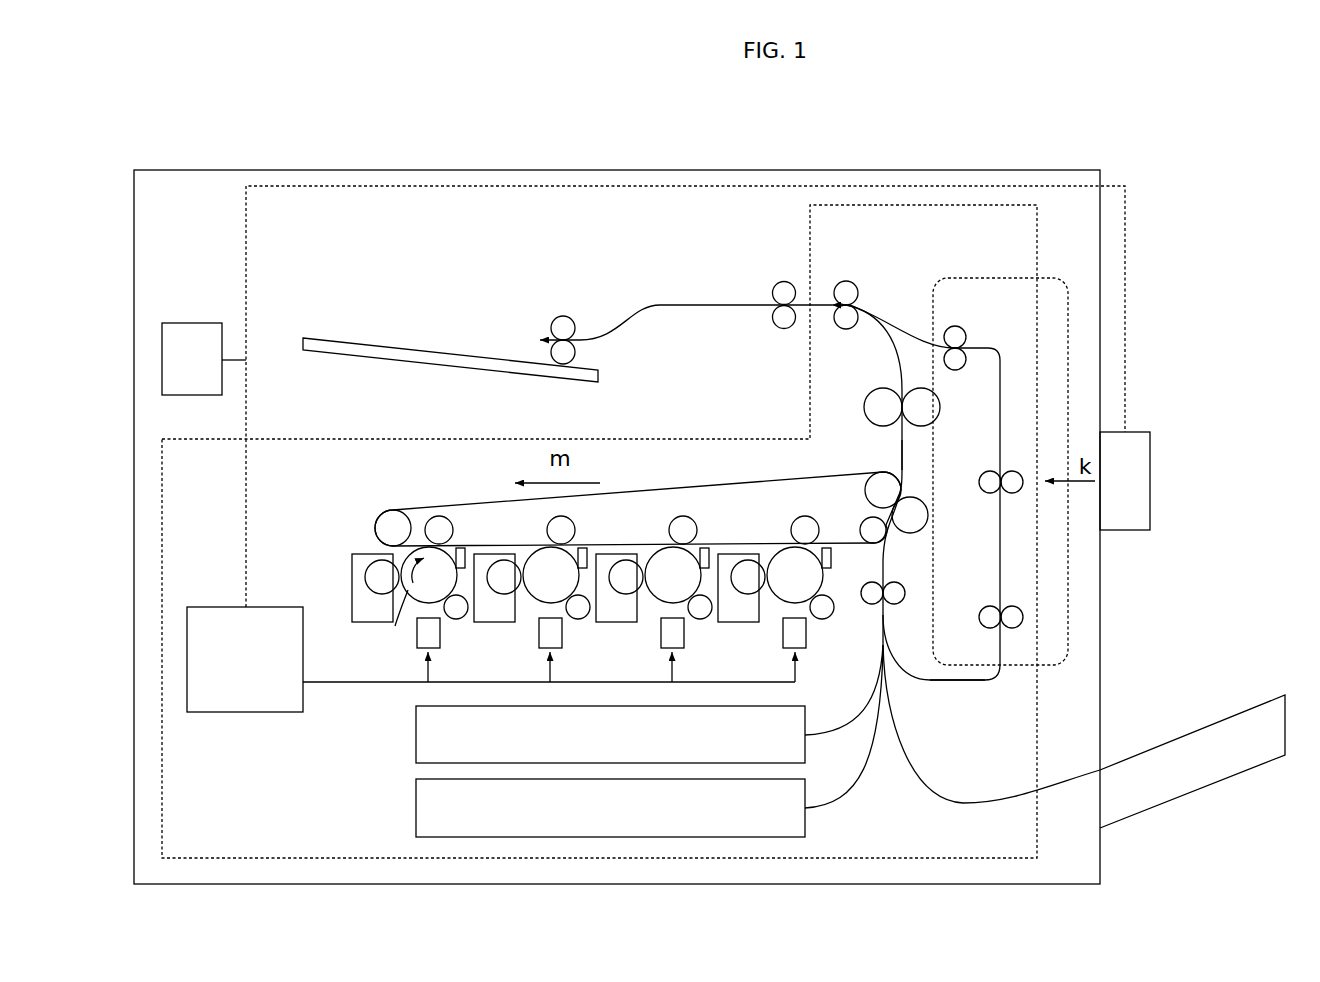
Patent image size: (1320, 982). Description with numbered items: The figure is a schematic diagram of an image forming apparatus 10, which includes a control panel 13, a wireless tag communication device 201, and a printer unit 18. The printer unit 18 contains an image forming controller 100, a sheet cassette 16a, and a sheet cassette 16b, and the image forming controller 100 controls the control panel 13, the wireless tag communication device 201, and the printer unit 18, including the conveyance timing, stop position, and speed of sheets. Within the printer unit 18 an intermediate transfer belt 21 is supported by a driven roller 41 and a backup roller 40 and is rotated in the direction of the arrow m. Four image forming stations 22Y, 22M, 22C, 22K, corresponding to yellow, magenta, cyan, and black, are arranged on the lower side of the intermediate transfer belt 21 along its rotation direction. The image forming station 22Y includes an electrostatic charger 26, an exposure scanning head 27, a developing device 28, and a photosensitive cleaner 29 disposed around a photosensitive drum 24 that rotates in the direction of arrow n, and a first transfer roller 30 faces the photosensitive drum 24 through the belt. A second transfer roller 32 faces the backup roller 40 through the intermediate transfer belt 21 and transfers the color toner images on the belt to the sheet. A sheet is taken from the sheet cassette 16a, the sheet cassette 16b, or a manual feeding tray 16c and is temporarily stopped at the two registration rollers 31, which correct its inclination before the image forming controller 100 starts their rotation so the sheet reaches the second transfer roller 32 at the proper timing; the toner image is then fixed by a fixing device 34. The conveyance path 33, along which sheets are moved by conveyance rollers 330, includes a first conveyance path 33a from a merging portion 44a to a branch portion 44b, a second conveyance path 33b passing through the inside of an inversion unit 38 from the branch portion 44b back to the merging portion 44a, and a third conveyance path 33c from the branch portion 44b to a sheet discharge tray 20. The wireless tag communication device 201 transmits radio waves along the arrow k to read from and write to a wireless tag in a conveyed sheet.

The image forming apparatus 10 is at (284, 156).
The control panel 13 is at (187, 323).
The printer unit 18 is at (200, 439).
The sheet discharge tray 20 is at (425, 346).
The intermediate transfer belt 21 is at (690, 489).
The image forming station 22Y is at (402, 569).
The image forming station 22M is at (570, 626).
The image forming station 22C is at (691, 628).
The image forming station 22K is at (771, 628).
The photosensitive drum 24 is at (405, 560).
The electrostatic charger 26 is at (468, 616).
The exposure scanning head 27 is at (416, 632).
The developing device 28 is at (351, 575).
The photosensitive cleaner 29 is at (462, 550).
The first transfer roller 30 is at (439, 516).
The registration roller 31 is at (906, 594).
The second transfer roller 32 is at (906, 534).
The conveyance path 33 is at (946, 695).
The first conveyance path 33a is at (902, 455).
The second conveyance path 33b is at (915, 335).
The third conveyance path 33c is at (787, 290).
The fixing device 34 is at (896, 386).
The inversion unit 38 is at (1045, 278).
The backup roller 40 is at (866, 491).
The driven roller 41 is at (383, 514).
The merging portion 44a is at (888, 648).
The branch portion 44b is at (880, 330).
The image forming controller 100 is at (247, 712).
The sheet cassette 16a is at (416, 732).
The sheet cassette 16b is at (416, 806).
The manual feeding tray 16c is at (1175, 740).
The wireless tag communication device 201 is at (1140, 432).
The conveyance rollers 330 is at (985, 494).